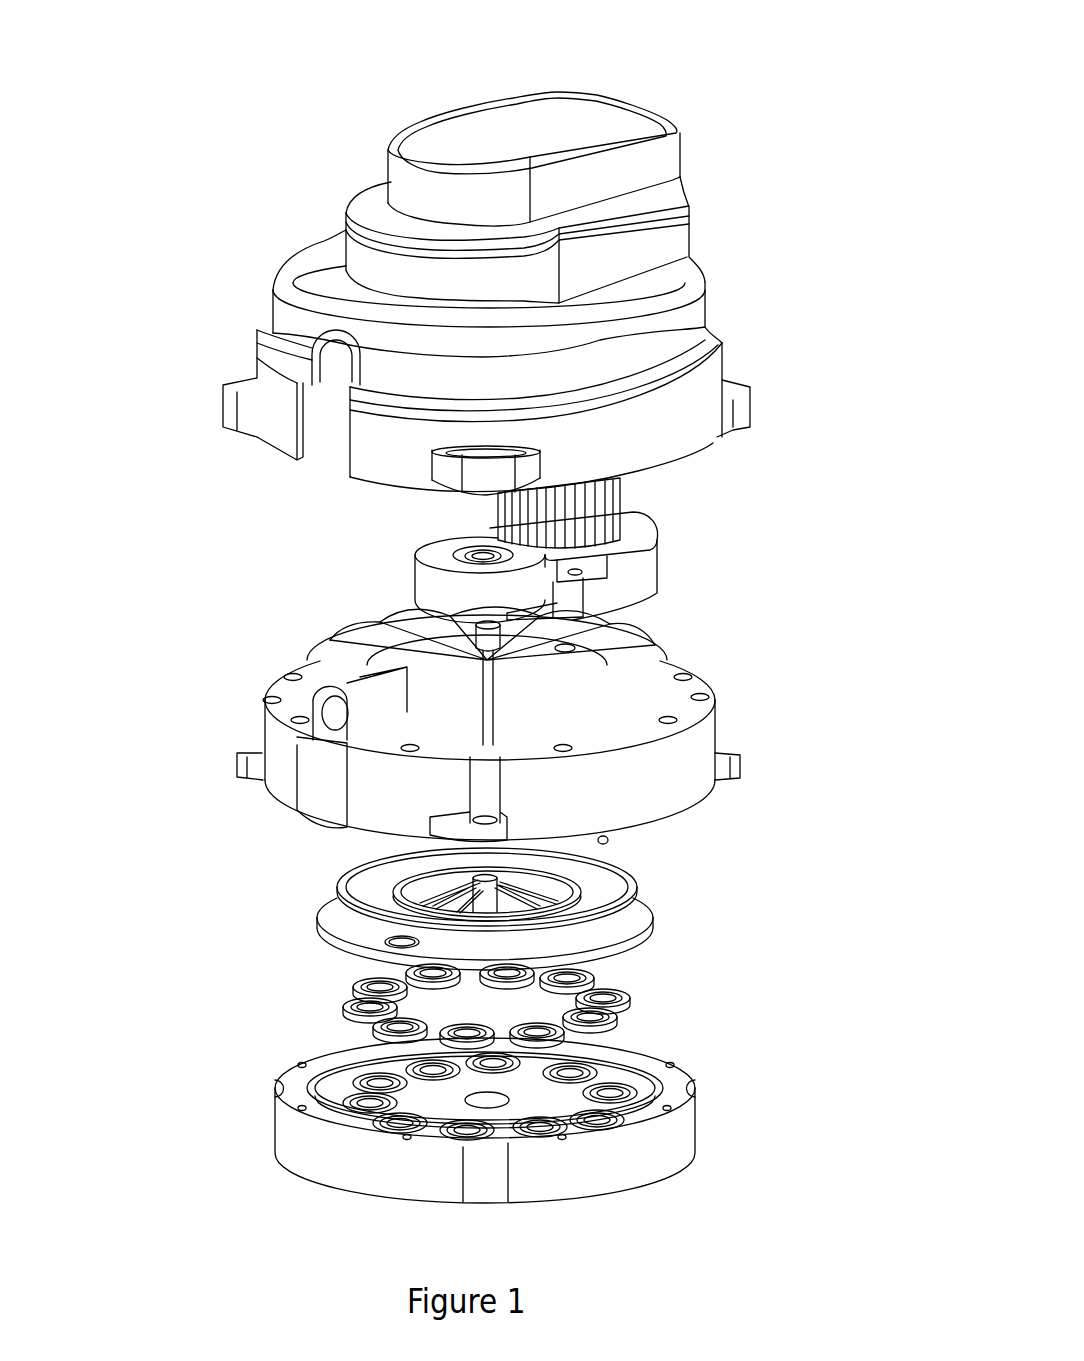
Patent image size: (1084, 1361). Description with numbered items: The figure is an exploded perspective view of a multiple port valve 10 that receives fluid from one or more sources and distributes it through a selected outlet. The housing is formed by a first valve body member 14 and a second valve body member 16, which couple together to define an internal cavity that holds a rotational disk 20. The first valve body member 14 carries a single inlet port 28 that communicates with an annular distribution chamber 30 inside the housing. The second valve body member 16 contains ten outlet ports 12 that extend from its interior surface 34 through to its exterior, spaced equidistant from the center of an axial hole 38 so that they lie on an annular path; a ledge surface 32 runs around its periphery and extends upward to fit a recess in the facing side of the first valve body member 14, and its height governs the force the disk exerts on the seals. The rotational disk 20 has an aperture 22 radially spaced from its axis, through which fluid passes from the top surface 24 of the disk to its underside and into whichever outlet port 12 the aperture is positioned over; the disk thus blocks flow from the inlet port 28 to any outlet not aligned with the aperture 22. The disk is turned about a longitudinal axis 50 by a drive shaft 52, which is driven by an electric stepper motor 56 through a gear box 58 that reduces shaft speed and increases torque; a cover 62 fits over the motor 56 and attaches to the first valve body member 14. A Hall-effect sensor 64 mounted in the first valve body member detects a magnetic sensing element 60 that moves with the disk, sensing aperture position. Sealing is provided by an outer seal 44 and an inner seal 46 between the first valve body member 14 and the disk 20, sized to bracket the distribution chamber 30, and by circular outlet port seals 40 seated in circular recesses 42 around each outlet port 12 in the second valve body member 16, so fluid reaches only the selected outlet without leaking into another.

The valve 10 is at (432, 77).
The outlet ports 12 is at (533, 1130).
The first valve body member 14 is at (668, 790).
The second valve body member 16 is at (324, 1148).
The rotational disk 20 is at (658, 919).
The aperture 22 is at (390, 940).
The top surface 24 is at (615, 940).
The inlet port 28 is at (340, 713).
The annular distribution chamber 30 is at (613, 662).
The ledge surface 32 is at (670, 1110).
The interior surface 34 is at (608, 1133).
The axial hole 38 is at (437, 1143).
The outlet port seals 40 is at (630, 1027).
The recesses 42 is at (410, 1095).
The outer seal 44 is at (637, 885).
The inner seal 46 is at (457, 878).
The longitudinal axis 50 is at (420, 1070).
The drive shaft 52 is at (490, 637).
The motor 56 is at (593, 520).
The gear box 58 is at (472, 593).
The magnetic sensing element 60 is at (377, 862).
The cover 62 is at (358, 262).
The sensor 64 is at (608, 842).